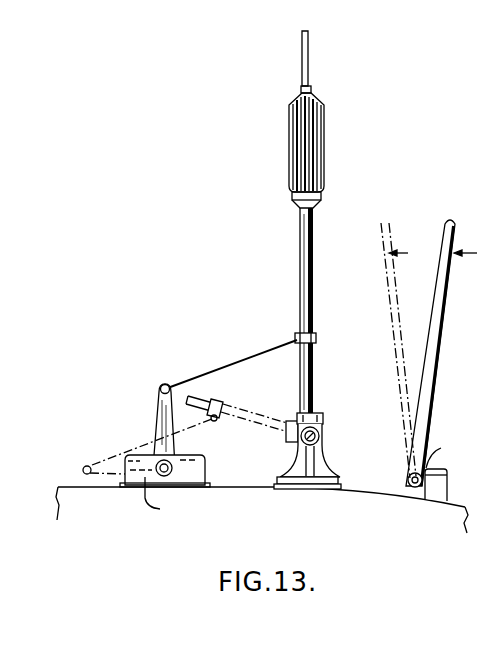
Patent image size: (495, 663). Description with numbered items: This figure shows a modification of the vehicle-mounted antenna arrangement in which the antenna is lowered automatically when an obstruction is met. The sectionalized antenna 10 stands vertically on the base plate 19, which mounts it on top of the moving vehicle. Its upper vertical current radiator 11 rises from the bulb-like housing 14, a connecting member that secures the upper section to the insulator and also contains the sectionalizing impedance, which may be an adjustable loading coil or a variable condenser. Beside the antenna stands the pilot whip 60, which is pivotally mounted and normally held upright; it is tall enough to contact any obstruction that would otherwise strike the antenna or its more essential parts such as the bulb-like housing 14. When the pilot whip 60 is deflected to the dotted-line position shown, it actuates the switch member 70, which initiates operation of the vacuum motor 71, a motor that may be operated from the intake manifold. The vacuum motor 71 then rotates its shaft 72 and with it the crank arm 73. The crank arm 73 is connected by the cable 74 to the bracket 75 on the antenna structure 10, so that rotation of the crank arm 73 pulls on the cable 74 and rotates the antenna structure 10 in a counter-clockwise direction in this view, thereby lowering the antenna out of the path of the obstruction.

The sectionalized antenna 10 is at (313, 88).
The upper vertical current radiator 11 is at (309, 56).
The bulb-like housing 14 is at (324, 109).
The base plate 19 is at (334, 477).
The pilot whip 60 is at (437, 280).
The switch member 70 is at (445, 474).
The vacuum motor 71 is at (206, 459).
The shaft 72 is at (170, 462).
The crank arm 73 is at (158, 415).
The cable 74 is at (226, 366).
The bracket 75 is at (297, 336).